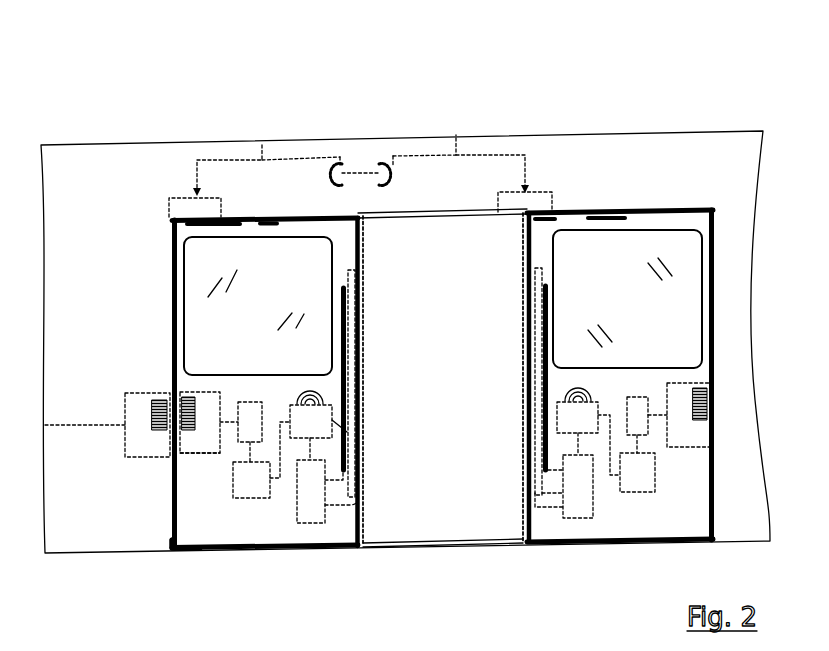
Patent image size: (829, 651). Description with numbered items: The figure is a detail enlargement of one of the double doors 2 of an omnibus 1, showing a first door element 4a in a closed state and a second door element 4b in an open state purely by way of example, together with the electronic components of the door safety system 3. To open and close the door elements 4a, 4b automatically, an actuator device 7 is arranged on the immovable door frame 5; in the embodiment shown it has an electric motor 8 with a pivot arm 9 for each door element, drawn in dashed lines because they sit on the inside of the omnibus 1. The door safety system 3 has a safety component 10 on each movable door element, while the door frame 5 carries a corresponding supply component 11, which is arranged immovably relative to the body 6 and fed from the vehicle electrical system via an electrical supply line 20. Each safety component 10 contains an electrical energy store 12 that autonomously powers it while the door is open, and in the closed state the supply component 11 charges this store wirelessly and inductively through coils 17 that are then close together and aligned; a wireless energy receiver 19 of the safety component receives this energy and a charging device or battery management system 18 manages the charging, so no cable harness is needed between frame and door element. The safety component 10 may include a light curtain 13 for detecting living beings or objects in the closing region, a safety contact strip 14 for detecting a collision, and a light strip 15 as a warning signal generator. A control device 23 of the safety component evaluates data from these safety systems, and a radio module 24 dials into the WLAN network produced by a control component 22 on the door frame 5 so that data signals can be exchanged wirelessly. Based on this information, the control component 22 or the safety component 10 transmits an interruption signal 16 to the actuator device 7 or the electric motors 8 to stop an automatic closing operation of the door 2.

The omnibus 1 is at (688, 81).
The double door 2 is at (363, 562).
The door safety system 3 is at (621, 86).
The first door element 4a is at (172, 266).
The second door element 4b is at (683, 212).
The door frame 5 is at (167, 553).
The body 6 is at (167, 553).
The actuator device 7 is at (133, 209).
The electric motor 8 is at (179, 196).
The pivot arm 9 is at (244, 218).
The safety component 10 is at (262, 528).
The supply component 11 is at (125, 403).
The electrical energy store 12 is at (246, 499).
The light curtain 13 is at (362, 366).
The safety contact strip 14 is at (363, 244).
The light strip 15 is at (362, 306).
The interruption signal 16 is at (262, 145).
The coil 17 is at (178, 394).
The battery management system 18 is at (248, 444).
The wireless energy receiver 19 is at (190, 455).
The electrical supply line 20 is at (66, 432).
The control component 22 is at (360, 152).
The control device 23 is at (364, 497).
The radio module 24 is at (364, 432).